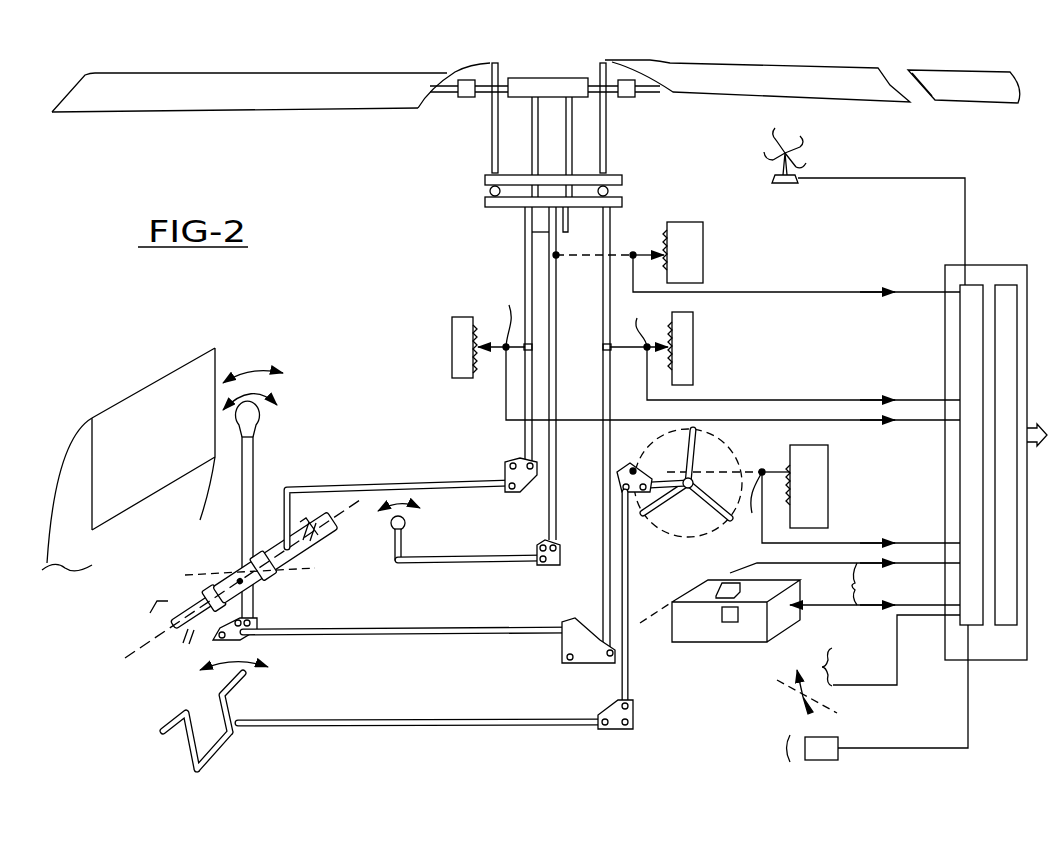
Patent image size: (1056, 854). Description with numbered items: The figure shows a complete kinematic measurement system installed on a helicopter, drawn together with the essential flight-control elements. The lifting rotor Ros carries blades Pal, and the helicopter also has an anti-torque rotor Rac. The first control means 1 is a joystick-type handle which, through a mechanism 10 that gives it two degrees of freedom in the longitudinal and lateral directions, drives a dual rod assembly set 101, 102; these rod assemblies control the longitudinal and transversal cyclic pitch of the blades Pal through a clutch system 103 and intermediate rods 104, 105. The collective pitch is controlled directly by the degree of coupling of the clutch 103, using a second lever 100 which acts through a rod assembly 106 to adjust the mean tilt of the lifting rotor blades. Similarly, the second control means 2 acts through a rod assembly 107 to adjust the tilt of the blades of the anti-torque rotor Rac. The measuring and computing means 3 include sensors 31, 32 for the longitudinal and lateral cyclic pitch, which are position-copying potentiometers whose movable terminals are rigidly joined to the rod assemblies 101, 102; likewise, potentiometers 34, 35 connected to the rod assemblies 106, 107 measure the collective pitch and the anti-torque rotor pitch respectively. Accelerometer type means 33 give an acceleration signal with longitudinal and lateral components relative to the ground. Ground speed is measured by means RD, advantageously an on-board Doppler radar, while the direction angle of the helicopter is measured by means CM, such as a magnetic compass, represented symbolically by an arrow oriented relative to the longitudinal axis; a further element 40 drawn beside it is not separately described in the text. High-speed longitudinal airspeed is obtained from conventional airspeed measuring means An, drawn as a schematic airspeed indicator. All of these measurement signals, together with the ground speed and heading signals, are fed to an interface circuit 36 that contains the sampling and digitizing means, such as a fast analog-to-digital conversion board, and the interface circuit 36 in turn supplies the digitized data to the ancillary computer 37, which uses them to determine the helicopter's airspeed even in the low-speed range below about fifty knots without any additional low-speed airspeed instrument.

The first control means 1 is at (370, 527).
The second control means 2 is at (262, 703).
The measuring and computing means 3 is at (976, 435).
The mechanism 10 is at (268, 578).
The longitudinal cyclic pitch measuring means 31 is at (455, 345).
The lateral cyclic pitch measuring means 32 is at (690, 360).
The accelerometer type means 33 is at (698, 642).
The collective pitch measuring means 34 is at (688, 250).
The anti-torque rotor pitch measuring means 35 is at (812, 480).
The interface circuit 36 is at (970, 285).
The ancillary computer 37 is at (1006, 285).
The magnetic compass 40 is at (800, 697).
The second lever 100 is at (405, 530).
The rod assembly 101 is at (436, 486).
The rod assembly 102 is at (393, 630).
The clutch system 103 is at (488, 190).
The intermediate rod 104 is at (490, 130).
The intermediate rod 105 is at (606, 140).
The rod assembly 106 is at (549, 272).
The rod assembly 107 is at (440, 718).
The blades Pal is at (322, 77).
The lifting rotor Ros is at (530, 86).
The high airspeed measuring means An is at (800, 150).
The anti-torque rotor Rac is at (715, 455).
The direction angle measuring means CM is at (800, 700).
The ground speed measuring means RD is at (835, 757).